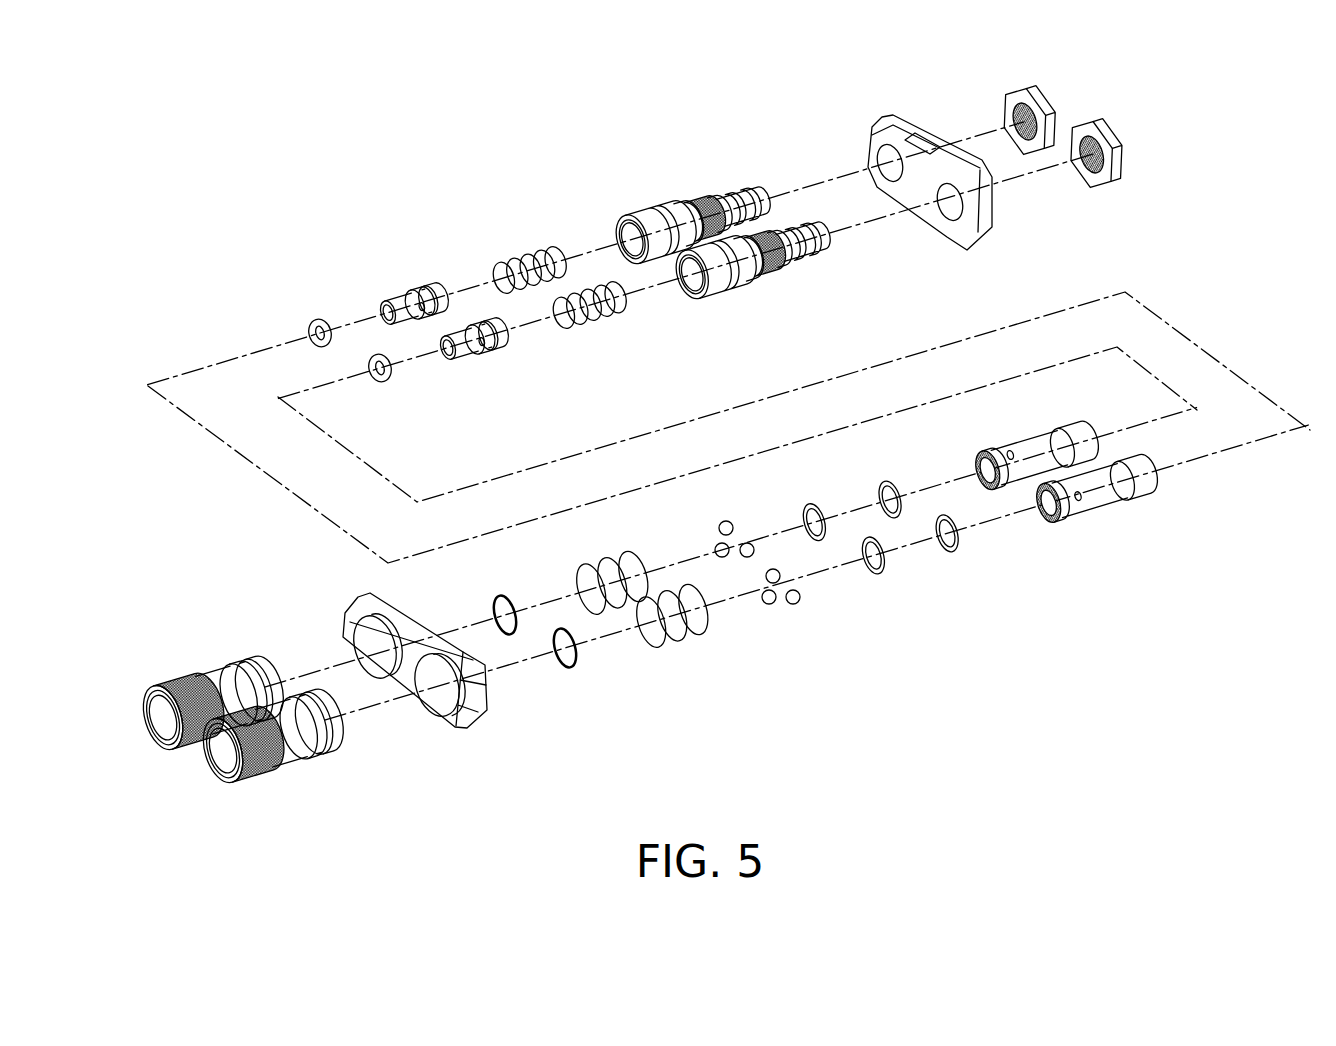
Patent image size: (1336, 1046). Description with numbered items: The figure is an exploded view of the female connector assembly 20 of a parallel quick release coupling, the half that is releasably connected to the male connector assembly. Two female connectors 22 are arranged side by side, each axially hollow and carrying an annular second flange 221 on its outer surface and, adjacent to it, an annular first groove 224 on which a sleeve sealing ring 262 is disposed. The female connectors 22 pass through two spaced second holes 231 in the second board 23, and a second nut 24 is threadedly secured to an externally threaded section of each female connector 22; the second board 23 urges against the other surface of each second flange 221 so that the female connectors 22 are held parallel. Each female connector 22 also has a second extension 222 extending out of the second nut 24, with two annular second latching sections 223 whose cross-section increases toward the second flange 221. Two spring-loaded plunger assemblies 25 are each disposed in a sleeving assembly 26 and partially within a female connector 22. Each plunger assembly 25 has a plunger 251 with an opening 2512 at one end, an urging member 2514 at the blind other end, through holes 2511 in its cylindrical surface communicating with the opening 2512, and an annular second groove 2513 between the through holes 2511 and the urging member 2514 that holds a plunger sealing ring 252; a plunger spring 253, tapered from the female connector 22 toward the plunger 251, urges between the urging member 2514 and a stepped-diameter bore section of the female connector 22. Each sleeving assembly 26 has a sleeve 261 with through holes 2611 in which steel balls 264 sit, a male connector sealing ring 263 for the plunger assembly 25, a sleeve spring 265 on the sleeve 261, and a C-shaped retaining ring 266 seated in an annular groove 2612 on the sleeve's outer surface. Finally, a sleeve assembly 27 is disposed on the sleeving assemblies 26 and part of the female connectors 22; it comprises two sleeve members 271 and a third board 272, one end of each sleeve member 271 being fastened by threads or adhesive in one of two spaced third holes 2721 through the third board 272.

The female connector assembly 20 is at (92, 163).
The female connector 22 is at (685, 188).
The second flange 221 is at (670, 208).
The second extension 222 is at (760, 197).
The second latching section 223 is at (723, 197).
The first groove 224 is at (658, 205).
The second board 23 is at (900, 125).
The second hole 231 is at (880, 157).
The second nut 24 is at (1035, 86).
The plunger assembly 25 is at (538, 130).
The plunger 251 is at (413, 230).
The through hole 2511 is at (418, 282).
The opening 2512 is at (382, 310).
The second groove 2513 is at (428, 290).
The urging member 2514 is at (441, 287).
The plunger sealing ring 252 is at (308, 323).
The plunger spring 253 is at (541, 260).
The sleeving assembly 26 is at (1160, 585).
The sleeve 261 is at (1103, 507).
The through hole 2611 is at (1082, 520).
The annular groove 2612 is at (988, 447).
The sleeve sealing ring 262 is at (968, 547).
The male connector sealing ring 263 is at (890, 570).
The steel ball 264 is at (797, 602).
The sleeve spring 265 is at (688, 640).
The retaining ring 266 is at (583, 667).
The sleeve assembly 27 is at (532, 810).
The sleeve member 271 is at (278, 762).
The third board 272 is at (442, 708).
The third hole 2721 is at (428, 710).